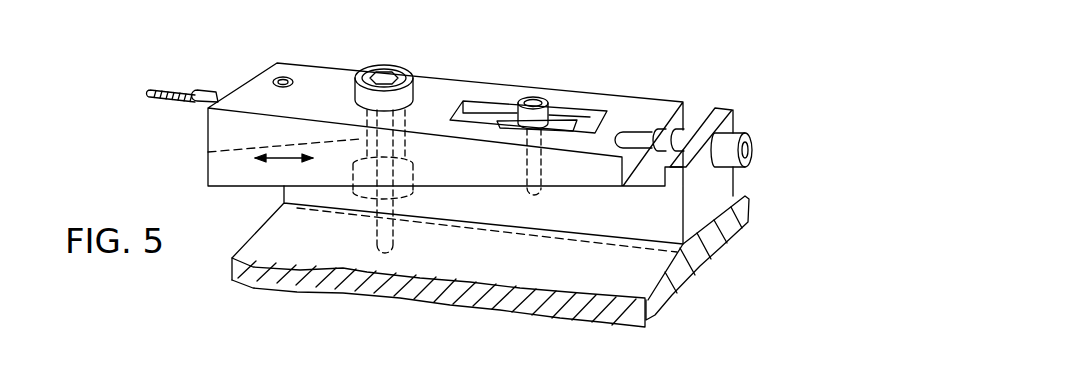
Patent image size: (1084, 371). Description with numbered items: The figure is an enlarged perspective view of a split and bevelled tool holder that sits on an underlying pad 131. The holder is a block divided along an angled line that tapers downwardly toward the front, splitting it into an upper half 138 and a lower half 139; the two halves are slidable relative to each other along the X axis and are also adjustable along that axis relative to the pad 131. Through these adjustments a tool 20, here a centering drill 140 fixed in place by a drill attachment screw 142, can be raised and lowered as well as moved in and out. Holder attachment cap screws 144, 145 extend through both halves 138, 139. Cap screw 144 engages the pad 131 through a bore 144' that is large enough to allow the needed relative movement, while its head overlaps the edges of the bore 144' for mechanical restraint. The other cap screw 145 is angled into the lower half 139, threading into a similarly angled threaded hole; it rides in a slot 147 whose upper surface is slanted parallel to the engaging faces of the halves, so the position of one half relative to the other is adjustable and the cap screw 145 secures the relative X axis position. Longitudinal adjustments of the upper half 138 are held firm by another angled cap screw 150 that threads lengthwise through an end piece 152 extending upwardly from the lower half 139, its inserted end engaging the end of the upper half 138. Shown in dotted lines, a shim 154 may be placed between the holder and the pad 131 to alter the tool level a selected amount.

The tool 20 is at (170, 88).
The centering drill 140 is at (213, 90).
The drill attachment screw 142 is at (287, 78).
The holder attachment cap screw 144 is at (381, 134).
The bore 144' is at (232, 154).
The upper half 138 is at (453, 80).
The holder attachment cap screw 145 is at (533, 98).
The slot 147 is at (570, 120).
The end piece 152 is at (727, 108).
The angled cap screw 150 is at (742, 127).
The shim 154 is at (745, 192).
The pad 131 is at (730, 233).
The lower half 139 is at (655, 225).